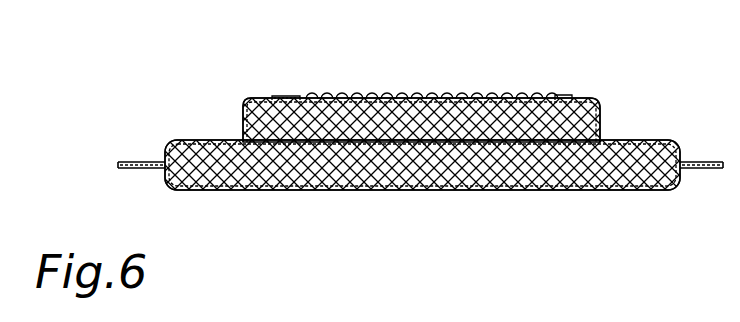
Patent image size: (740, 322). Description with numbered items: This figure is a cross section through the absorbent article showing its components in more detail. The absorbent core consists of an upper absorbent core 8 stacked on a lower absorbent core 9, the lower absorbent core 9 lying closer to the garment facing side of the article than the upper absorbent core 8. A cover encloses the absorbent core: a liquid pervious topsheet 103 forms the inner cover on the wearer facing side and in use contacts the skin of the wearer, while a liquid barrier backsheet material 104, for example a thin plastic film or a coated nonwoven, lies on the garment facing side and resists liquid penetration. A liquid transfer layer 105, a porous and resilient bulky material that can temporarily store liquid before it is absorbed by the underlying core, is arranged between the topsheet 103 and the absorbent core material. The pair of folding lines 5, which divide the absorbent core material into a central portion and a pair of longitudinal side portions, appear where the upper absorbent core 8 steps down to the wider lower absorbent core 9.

The folding lines 5 is at (242, 140).
The upper absorbent core 8 is at (585, 98).
The lower absorbent core 9 is at (497, 190).
The liquid pervious topsheet 103 is at (417, 93).
The liquid barrier backsheet material 104 is at (420, 192).
The liquid transfer layer 105 is at (553, 97).